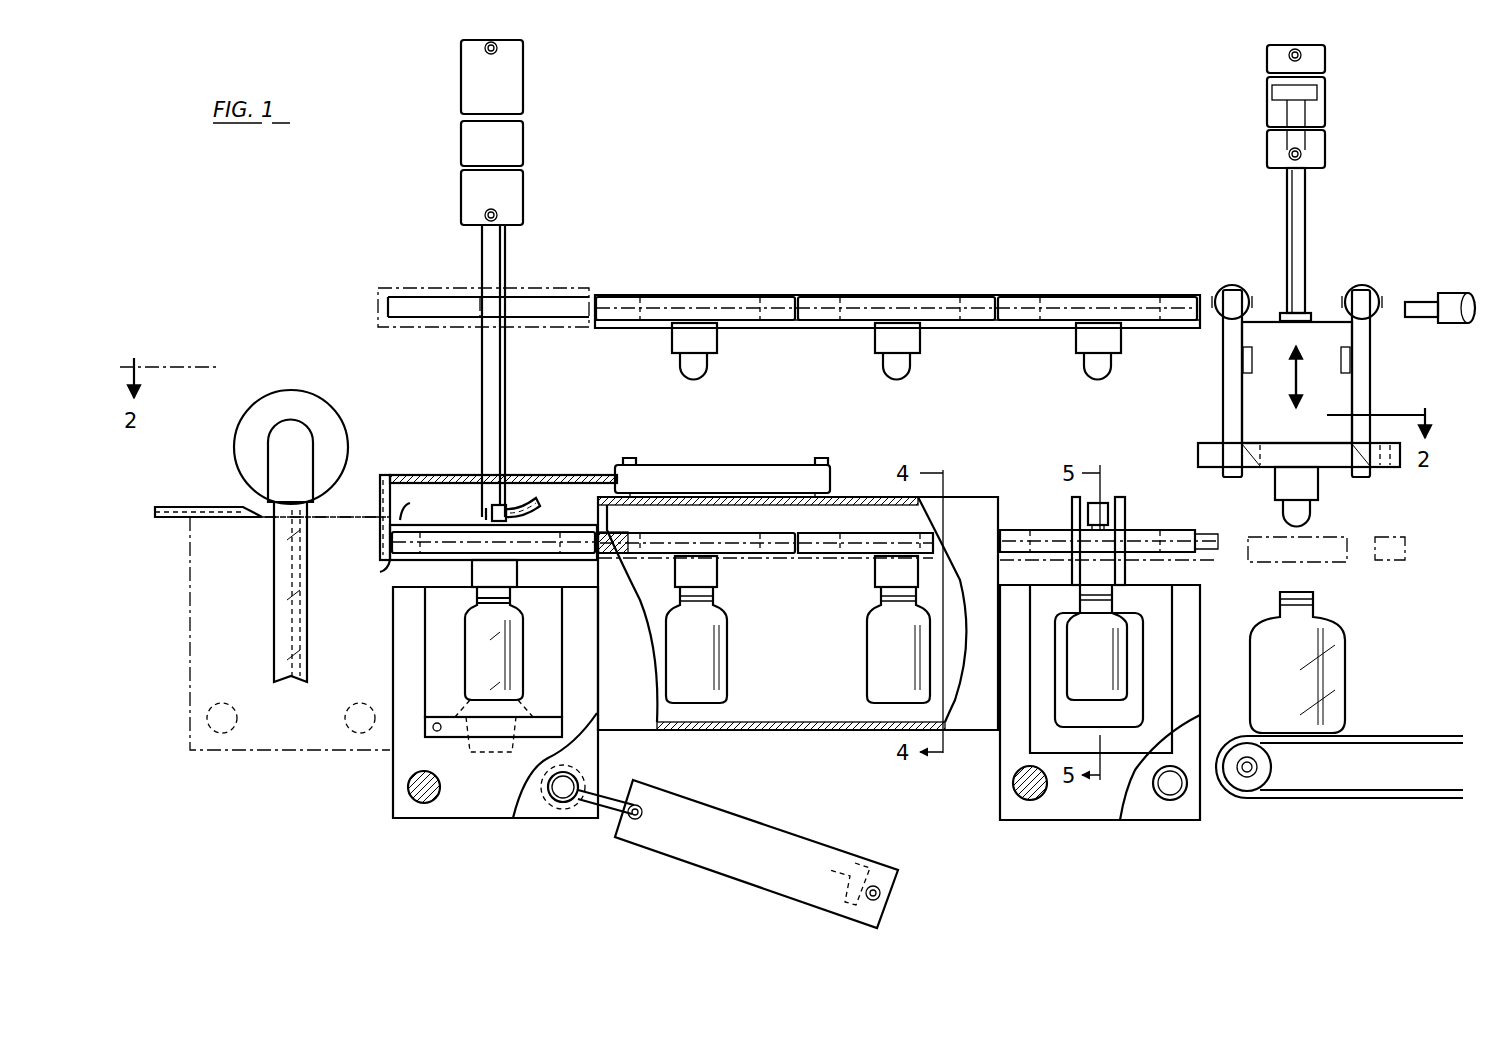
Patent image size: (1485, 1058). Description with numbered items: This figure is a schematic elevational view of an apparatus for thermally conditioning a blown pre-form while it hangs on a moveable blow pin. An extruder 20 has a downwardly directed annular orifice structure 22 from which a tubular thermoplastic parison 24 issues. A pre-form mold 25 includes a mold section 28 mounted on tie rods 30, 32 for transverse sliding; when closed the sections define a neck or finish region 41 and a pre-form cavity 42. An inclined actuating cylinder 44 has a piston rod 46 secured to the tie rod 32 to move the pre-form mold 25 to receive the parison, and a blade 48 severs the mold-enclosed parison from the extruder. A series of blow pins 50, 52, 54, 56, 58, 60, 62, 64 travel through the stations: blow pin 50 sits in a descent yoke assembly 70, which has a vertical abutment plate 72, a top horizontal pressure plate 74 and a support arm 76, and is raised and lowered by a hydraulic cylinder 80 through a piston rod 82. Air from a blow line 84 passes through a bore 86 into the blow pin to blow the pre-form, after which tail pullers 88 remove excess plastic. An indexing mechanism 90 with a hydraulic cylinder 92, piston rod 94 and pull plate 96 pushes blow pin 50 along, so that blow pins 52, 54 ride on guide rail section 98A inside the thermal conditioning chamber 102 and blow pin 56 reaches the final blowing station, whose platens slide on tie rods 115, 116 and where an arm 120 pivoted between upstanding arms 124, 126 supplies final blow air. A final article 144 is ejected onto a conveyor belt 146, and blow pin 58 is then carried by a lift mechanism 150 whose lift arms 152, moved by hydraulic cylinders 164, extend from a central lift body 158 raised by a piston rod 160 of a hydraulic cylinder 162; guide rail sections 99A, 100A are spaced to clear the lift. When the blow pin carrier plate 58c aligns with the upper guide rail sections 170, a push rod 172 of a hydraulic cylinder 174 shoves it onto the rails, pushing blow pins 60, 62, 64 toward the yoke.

The extruder 20 is at (326, 413).
The annular orifice structure 22 is at (304, 467).
The tubular thermoplastic parison 24 is at (274, 617).
The pre-form mold 25 is at (380, 810).
The mold section 28 is at (190, 617).
The tie rod 30 is at (424, 804).
The tie rod 32 is at (563, 803).
The neck or finish region 41 is at (476, 602).
The pre-form cavity 42 is at (470, 640).
The inclined actuating cylinder 44 is at (753, 833).
The piston rod 46 is at (616, 796).
The blade 48 is at (174, 506).
The blow pin 50 is at (519, 586).
The blow pin 52 is at (728, 585).
The blow pin 54 is at (872, 585).
The blow pin 56 is at (1125, 588).
The blow pin 58 is at (1323, 497).
The blow pin carrier plate 58c is at (1386, 468).
The blow pin 60 is at (1127, 352).
The blow pin 62 is at (925, 352).
The blow pin 64 is at (722, 352).
The descent yoke assembly 70 is at (378, 282).
The vertical abutment plate 72 is at (390, 543).
The top horizontal pressure plate 74 is at (417, 508).
The support arm 76 is at (392, 565).
The hydraulic cylinder 80 is at (524, 93).
The piston rod 82 is at (506, 380).
The blow line 84 is at (543, 502).
The bore 86 is at (490, 511).
The tail pullers 88 is at (453, 740).
The indexing mechanism 90 is at (479, 489).
The hydraulic cylinder 92 is at (742, 465).
The piston rod 94 is at (551, 480).
The pull plate 96 is at (380, 495).
The guide rail section 98A is at (781, 560).
The guide rail section 99A is at (1330, 556).
The guide rail section 100A is at (1410, 540).
The thermal conditioning chamber 102 is at (784, 731).
The tie rod 115 is at (1028, 800).
The tie rod 116 is at (1168, 800).
The arm 120 is at (1102, 500).
The upstanding arm 124 is at (1125, 508).
The upstanding arm 126 is at (1072, 508).
The final article 144 is at (1338, 658).
The conveyor belt 146 is at (1390, 736).
The lift mechanism 150 is at (1330, 289).
The lift arms 152 is at (1230, 410).
The central lift body 158 is at (1338, 397).
The piston rod 160 is at (1306, 202).
The hydraulic cylinder 162 is at (1326, 108).
The hydraulic cylinders 164 is at (1226, 288).
The guide rail sections 170 is at (801, 331).
The push rod 172 is at (1418, 318).
The hydraulic cylinder 174 is at (1456, 324).